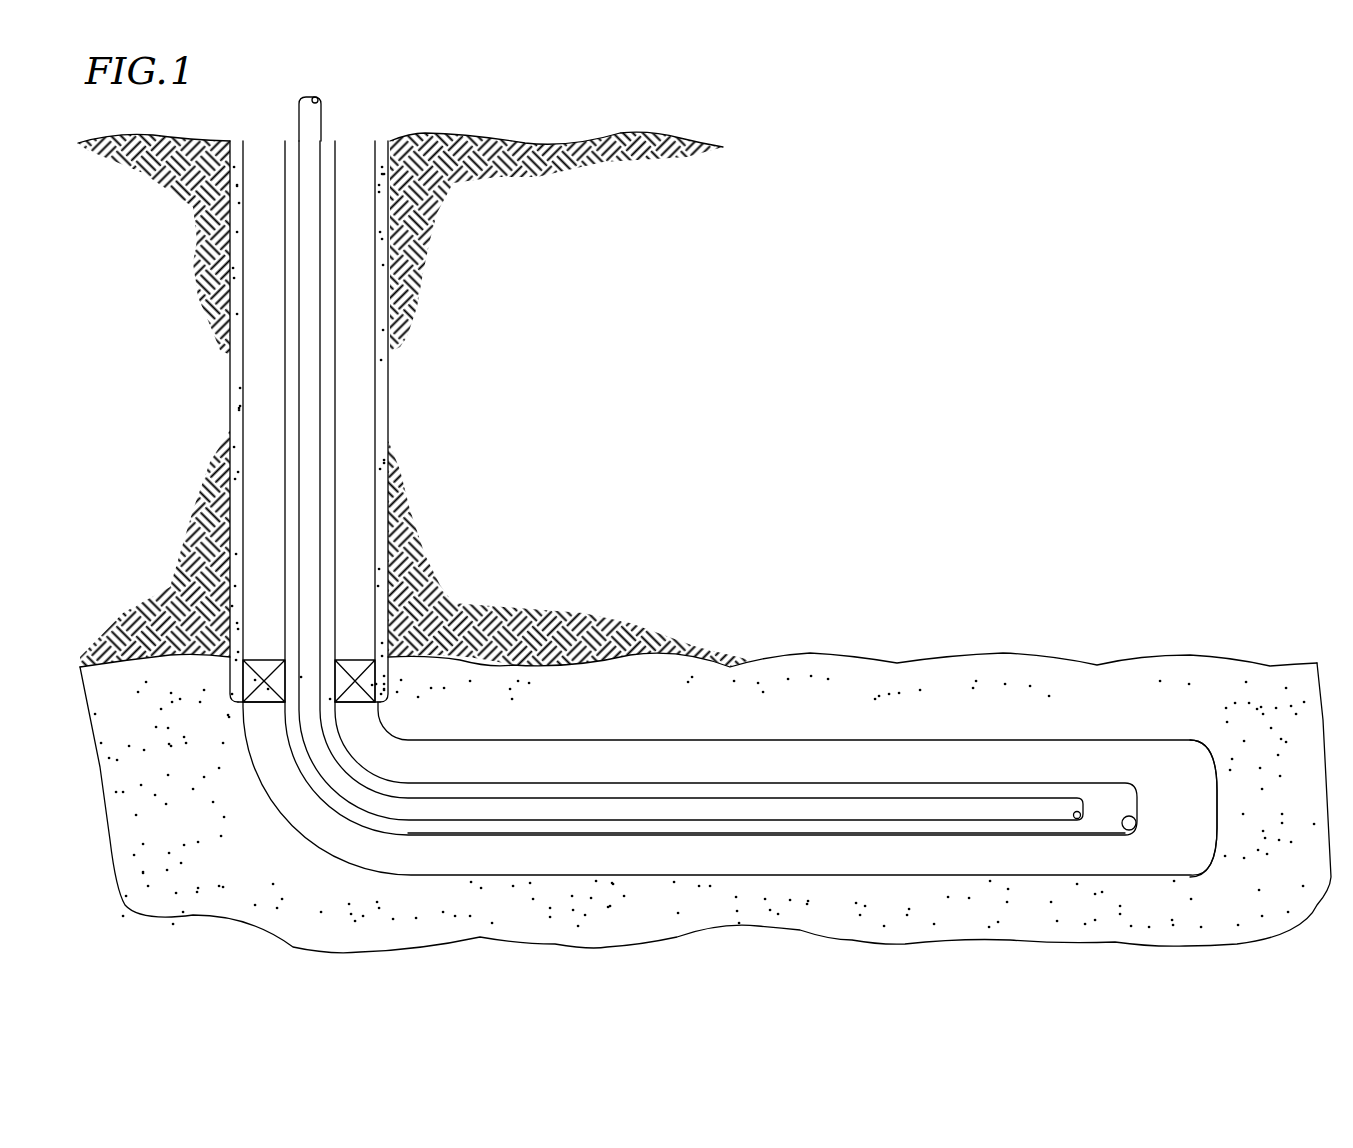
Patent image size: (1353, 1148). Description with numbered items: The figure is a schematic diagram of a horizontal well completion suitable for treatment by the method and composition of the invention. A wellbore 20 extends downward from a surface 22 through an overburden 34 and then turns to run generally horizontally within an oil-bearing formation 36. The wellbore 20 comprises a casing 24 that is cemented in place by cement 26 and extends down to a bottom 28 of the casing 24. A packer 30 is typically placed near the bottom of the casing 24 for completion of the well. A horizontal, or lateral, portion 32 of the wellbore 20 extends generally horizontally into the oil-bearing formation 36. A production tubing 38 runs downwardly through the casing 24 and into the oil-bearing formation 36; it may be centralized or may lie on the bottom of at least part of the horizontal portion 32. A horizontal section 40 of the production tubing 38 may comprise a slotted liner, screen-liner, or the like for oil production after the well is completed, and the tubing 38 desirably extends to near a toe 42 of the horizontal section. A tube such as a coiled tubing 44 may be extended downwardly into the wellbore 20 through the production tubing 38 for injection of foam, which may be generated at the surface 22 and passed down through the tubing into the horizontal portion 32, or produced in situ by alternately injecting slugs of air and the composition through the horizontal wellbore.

The wellbore 20 is at (392, 372).
The surface 22 is at (445, 133).
The casing 24 is at (378, 397).
The cement 26 is at (383, 447).
The bottom of casing 28 is at (378, 696).
The packer 30 is at (349, 659).
The horizontal portion of wellbore 32 is at (865, 742).
The overburden 34 is at (514, 414).
The oil-bearing formation 36 is at (157, 829).
The production tubing 38 is at (285, 363).
The horizontal section of production tubing 40 is at (825, 834).
The toe 42 is at (1217, 815).
The coiled tubing 44 is at (322, 122).